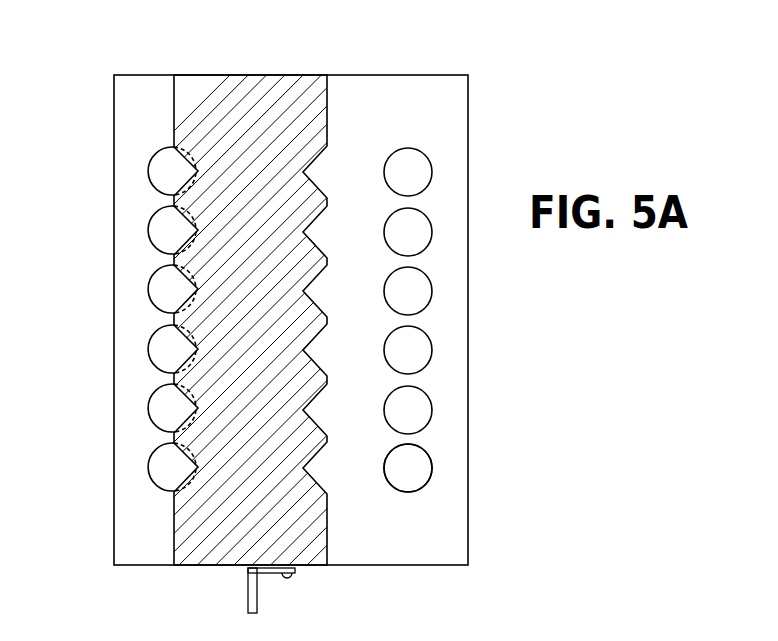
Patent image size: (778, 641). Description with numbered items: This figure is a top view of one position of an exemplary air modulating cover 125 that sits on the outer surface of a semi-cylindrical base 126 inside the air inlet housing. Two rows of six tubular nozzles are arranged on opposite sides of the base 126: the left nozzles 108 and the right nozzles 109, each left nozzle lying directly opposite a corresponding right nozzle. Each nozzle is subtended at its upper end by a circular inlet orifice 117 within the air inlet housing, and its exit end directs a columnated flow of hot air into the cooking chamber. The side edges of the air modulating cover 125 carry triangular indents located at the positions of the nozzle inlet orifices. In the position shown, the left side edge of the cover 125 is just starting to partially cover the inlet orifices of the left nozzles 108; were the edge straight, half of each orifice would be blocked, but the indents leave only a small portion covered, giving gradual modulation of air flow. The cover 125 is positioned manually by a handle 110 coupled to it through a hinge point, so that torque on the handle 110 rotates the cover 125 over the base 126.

The nozzles 108 is at (160, 468).
The nozzles 109 is at (407, 468).
The handle 110 is at (272, 570).
The circular inlet orifice 117 is at (425, 487).
The air modulating cover 125 is at (225, 100).
The semi-cylindrical base 126 is at (372, 103).